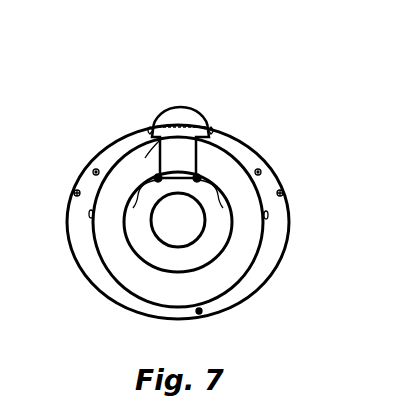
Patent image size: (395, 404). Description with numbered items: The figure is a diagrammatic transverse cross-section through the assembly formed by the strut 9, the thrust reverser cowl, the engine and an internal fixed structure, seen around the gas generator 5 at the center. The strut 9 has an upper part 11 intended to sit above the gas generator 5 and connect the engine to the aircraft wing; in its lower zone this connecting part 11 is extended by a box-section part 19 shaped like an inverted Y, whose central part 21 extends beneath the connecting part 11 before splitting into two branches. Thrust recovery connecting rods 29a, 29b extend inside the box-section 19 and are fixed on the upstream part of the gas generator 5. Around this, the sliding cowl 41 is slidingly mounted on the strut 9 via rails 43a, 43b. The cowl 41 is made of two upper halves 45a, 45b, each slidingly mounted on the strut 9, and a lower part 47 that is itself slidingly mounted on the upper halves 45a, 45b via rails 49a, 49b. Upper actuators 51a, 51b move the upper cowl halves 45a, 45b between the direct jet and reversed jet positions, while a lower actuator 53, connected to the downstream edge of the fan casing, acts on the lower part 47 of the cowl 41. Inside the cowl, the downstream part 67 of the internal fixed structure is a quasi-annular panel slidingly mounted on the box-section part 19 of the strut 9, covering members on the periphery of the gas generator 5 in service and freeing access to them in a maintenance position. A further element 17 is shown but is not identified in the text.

The gas generator 5 is at (146, 243).
The strut 9 is at (173, 77).
The upper part 11 is at (201, 80).
The body 17 is at (90, 402).
The box-section part 19 is at (199, 166).
The central part 21 is at (150, 158).
The thrust recovery connecting rod 29a is at (137, 192).
The thrust recovery connecting rod 29b is at (220, 192).
The sliding cowl 41 is at (246, 132).
The rail 43a is at (150, 128).
The rail 43b is at (210, 128).
The upper half 45a is at (104, 137).
The upper half 45b is at (281, 170).
The lower part 47 is at (258, 311).
The rail 49a is at (75, 195).
The rail 49b is at (283, 195).
The upper actuator 51a is at (93, 171).
The upper actuator 51b is at (261, 171).
The lower actuator 53 is at (201, 313).
The downstream part 67 is at (148, 268).